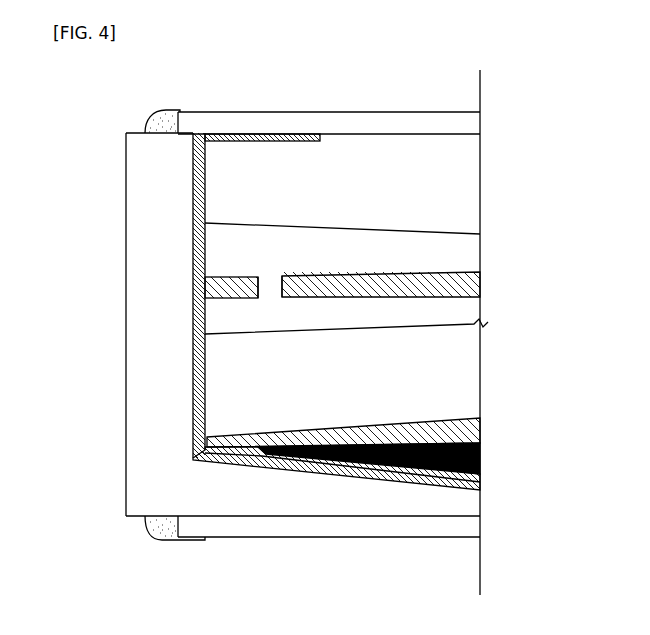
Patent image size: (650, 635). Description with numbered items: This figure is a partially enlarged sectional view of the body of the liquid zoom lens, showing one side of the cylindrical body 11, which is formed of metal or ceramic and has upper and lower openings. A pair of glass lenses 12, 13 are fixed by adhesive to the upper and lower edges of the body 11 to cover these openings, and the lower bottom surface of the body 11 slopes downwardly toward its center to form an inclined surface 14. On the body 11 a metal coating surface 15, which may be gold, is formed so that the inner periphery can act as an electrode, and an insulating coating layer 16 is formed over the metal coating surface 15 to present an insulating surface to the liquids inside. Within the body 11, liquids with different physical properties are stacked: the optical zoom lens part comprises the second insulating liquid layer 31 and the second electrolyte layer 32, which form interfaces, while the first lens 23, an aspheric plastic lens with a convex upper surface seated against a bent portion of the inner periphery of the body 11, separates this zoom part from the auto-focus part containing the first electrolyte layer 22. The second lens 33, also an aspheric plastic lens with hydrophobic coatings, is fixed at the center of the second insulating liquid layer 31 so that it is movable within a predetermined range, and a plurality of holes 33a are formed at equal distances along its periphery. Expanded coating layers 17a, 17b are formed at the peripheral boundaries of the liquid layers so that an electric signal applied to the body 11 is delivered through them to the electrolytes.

The cylindrical body 11 is at (137, 327).
The glass lens 12 is at (351, 122).
The glass lens 13 is at (353, 540).
The inclined surface 14 is at (411, 490).
The metal coating surface 15 is at (195, 208).
The insulating coating layer 16 is at (203, 178).
The expanded coating layer 17a is at (262, 470).
The expanded coating layer 17b is at (280, 133).
The first electrolyte layer 22 is at (476, 465).
The first lens 23 is at (478, 436).
The second insulating liquid layer 31 is at (476, 253).
The second electrolyte layer 32 is at (476, 184).
The second lens 33 is at (476, 287).
The hole 33a is at (258, 293).